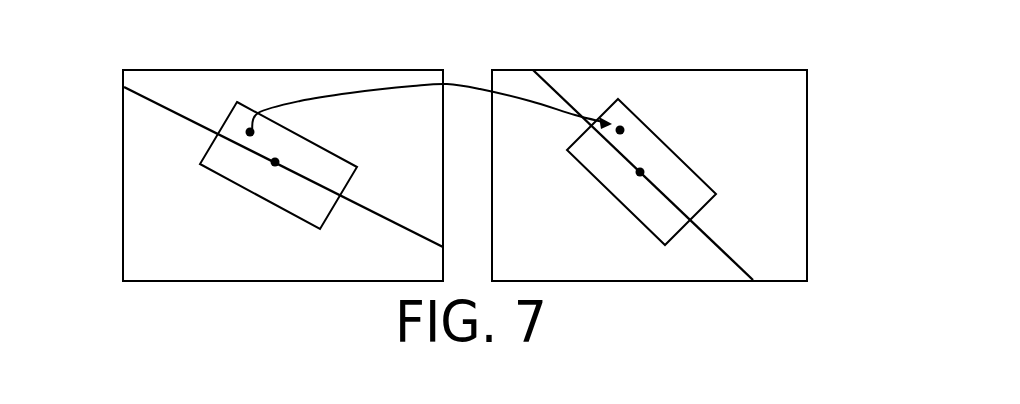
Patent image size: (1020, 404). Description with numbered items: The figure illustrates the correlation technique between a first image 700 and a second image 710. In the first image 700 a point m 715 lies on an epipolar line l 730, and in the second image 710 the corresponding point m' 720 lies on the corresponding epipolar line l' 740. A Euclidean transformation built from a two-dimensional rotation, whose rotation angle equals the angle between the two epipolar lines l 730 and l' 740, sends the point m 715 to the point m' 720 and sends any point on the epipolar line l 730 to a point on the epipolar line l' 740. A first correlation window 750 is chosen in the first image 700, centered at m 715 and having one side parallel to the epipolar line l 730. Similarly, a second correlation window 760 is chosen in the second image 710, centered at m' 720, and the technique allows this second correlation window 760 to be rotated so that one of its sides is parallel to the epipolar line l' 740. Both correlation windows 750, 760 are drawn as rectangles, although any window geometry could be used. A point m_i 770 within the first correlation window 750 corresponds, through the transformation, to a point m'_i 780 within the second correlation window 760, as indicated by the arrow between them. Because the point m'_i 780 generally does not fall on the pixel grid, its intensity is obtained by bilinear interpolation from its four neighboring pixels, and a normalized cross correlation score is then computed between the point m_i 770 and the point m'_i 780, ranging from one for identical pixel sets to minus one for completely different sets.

The first image 700 is at (155, 175).
The second image 710 is at (787, 108).
The point m 715 is at (275, 168).
The point m' 720 is at (640, 180).
The epipolar line l 730 is at (160, 100).
The epipolar line l' 740 is at (733, 260).
The first correlation window 750 is at (241, 102).
The second correlation window 760 is at (646, 128).
The point m_i 770 is at (244, 132).
The point m'_i 780 is at (608, 132).